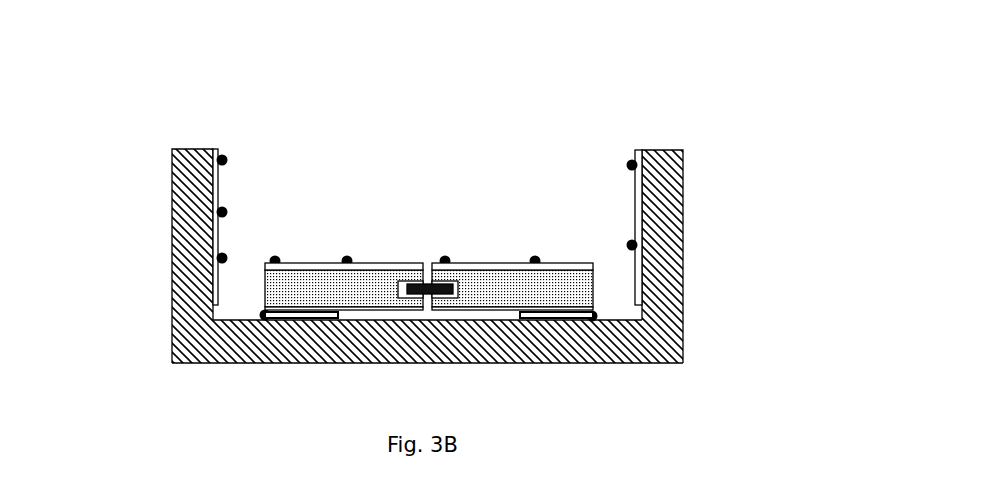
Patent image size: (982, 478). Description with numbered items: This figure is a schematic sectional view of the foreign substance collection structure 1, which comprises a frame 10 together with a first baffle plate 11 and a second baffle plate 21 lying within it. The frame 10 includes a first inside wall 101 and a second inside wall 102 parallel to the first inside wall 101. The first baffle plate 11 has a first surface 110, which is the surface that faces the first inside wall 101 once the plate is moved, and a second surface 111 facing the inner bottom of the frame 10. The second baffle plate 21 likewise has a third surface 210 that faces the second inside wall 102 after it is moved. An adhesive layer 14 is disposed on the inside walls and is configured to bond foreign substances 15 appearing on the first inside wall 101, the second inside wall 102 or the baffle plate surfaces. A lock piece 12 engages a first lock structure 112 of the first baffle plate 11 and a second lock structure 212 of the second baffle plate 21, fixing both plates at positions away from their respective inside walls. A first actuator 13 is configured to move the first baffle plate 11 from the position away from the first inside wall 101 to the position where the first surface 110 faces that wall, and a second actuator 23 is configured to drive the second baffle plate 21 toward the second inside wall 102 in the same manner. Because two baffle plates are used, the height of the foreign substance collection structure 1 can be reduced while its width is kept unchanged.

The foreign substance collection structure 1 is at (211, 83).
The frame 10 is at (426, 234).
The first inside wall 101 is at (180, 150).
The second inside wall 102 is at (643, 182).
The adhesive layer 14 is at (213, 192).
The foreign substances 15 is at (220, 158).
The first baffle plate 11 is at (254, 253).
The first surface 110 is at (340, 266).
The second surface 111 is at (337, 307).
The first lock structure 112 is at (408, 275).
The lock piece 12 is at (430, 283).
The first actuator 13 is at (265, 315).
The second baffle plate 21 is at (591, 252).
The third surface 210 is at (580, 263).
The second lock structure 212 is at (458, 287).
The second actuator 23 is at (592, 316).